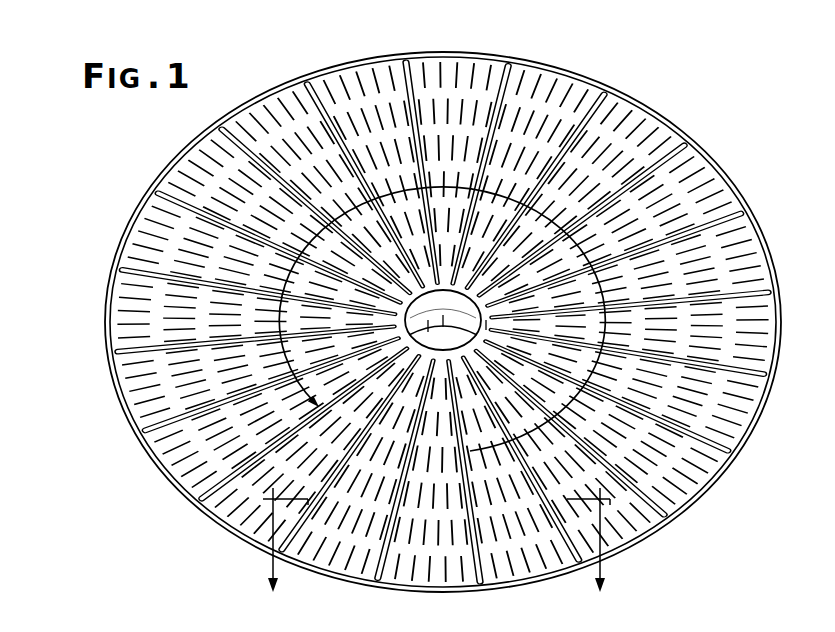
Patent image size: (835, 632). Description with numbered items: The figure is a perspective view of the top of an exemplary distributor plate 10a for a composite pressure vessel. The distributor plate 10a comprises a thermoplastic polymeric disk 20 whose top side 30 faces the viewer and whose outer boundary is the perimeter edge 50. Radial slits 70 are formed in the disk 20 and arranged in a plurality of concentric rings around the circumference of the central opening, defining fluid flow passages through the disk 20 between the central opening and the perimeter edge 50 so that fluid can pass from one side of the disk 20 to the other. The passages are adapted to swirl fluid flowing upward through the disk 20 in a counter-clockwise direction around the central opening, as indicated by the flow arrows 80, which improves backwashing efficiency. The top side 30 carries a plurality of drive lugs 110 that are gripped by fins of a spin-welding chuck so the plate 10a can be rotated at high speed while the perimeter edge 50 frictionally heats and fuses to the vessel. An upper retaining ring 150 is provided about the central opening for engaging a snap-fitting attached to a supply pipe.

The distributor plate 10a is at (80, 217).
The thermoplastic polymeric disk 20 is at (740, 407).
The top side 30 is at (667, 460).
The perimeter edge 50 is at (643, 543).
The radial slits 70 is at (133, 334).
The flow arrows 80 is at (453, 312).
The drive lugs 110 is at (720, 212).
The upper retaining ring 150 is at (455, 312).